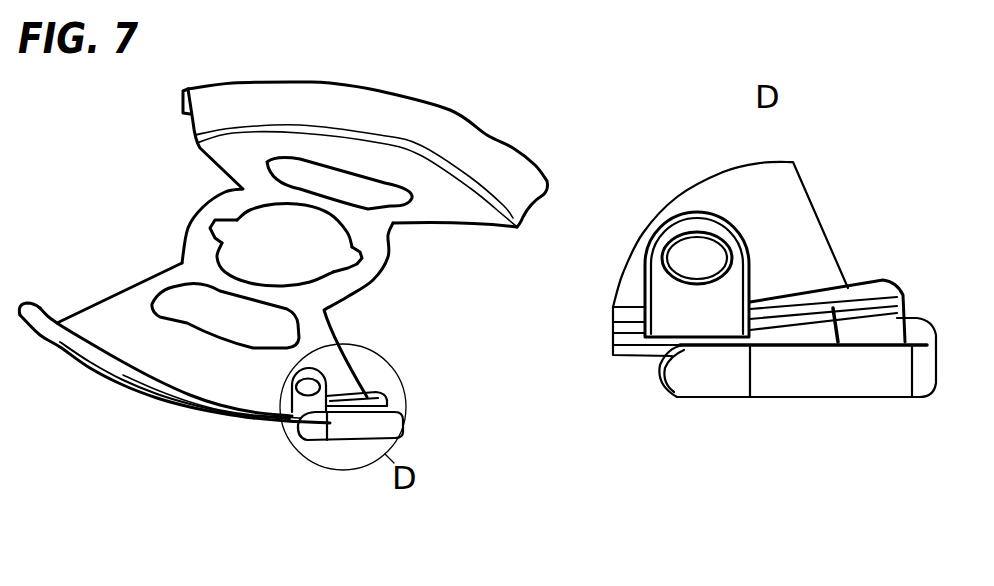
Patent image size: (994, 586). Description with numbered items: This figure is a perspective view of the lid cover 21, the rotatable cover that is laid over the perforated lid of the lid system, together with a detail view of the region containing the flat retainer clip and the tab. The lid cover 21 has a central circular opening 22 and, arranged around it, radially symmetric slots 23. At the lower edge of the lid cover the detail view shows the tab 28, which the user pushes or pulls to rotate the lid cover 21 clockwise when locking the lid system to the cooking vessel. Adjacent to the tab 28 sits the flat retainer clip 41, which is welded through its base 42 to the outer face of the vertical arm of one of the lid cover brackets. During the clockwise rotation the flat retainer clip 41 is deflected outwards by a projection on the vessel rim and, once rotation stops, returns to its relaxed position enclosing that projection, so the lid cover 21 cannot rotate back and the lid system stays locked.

The lid cover 21 is at (503, 125).
The central circular opening 22 is at (283, 240).
The radially symmetric slots 23 is at (218, 230).
The tab 28 is at (697, 303).
The flat retainer clip 41 is at (813, 407).
The base 42 is at (884, 335).